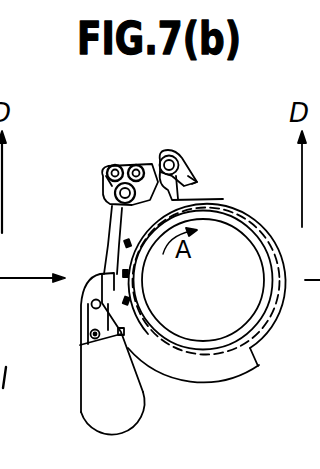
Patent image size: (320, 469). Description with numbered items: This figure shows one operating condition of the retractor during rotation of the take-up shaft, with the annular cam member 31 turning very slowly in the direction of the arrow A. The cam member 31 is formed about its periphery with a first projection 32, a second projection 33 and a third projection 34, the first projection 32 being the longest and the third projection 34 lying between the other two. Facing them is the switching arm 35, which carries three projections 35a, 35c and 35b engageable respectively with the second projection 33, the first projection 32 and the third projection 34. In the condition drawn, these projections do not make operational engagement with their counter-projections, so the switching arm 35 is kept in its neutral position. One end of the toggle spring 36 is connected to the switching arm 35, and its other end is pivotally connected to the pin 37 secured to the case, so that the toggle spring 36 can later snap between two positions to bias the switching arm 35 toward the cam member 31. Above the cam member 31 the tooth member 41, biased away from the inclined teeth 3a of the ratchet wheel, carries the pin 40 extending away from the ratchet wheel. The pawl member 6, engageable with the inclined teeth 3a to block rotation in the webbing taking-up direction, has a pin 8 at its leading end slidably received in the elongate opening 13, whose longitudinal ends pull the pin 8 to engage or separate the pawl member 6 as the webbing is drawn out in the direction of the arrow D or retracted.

The inclined teeth 3a is at (218, 200).
The pawl member 6 is at (106, 408).
The pin 8 is at (82, 350).
The elongate opening 13 is at (88, 304).
The cam member 31 is at (275, 323).
The first projection 32 is at (190, 372).
The second projection 33 is at (198, 223).
The third projection 34 is at (108, 246).
The switching arm 35 is at (170, 147).
The projection 35a is at (192, 181).
The projection 35b is at (104, 183).
The projection 35c is at (150, 259).
The toggle spring 36 is at (108, 166).
The pin 37 is at (122, 162).
The pin 40 is at (148, 168).
The tooth member 41 is at (108, 200).